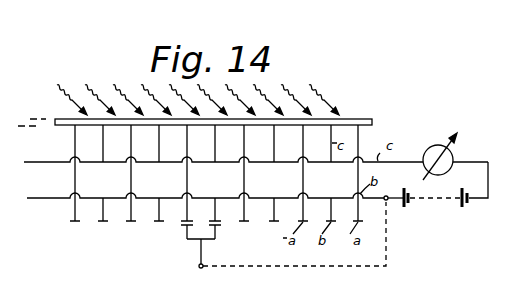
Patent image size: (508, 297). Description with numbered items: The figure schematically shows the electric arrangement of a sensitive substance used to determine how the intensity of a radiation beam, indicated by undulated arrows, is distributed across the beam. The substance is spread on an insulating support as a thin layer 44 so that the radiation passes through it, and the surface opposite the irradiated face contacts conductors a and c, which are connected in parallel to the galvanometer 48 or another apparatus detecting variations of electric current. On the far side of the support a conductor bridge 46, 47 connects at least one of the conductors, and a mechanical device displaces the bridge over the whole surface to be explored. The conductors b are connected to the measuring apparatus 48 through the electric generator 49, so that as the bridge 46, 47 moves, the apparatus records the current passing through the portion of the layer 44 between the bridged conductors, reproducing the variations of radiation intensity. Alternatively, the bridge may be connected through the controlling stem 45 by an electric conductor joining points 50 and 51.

The thin layer 44 is at (358, 114).
The controlling stem 45 is at (201, 258).
The conductor bridge 46 is at (182, 233).
The conductor bridge 47 is at (216, 239).
The galvanometer 48 is at (452, 148).
The electric generator 49 is at (444, 207).
The point 50 is at (387, 201).
The point 51 is at (202, 268).